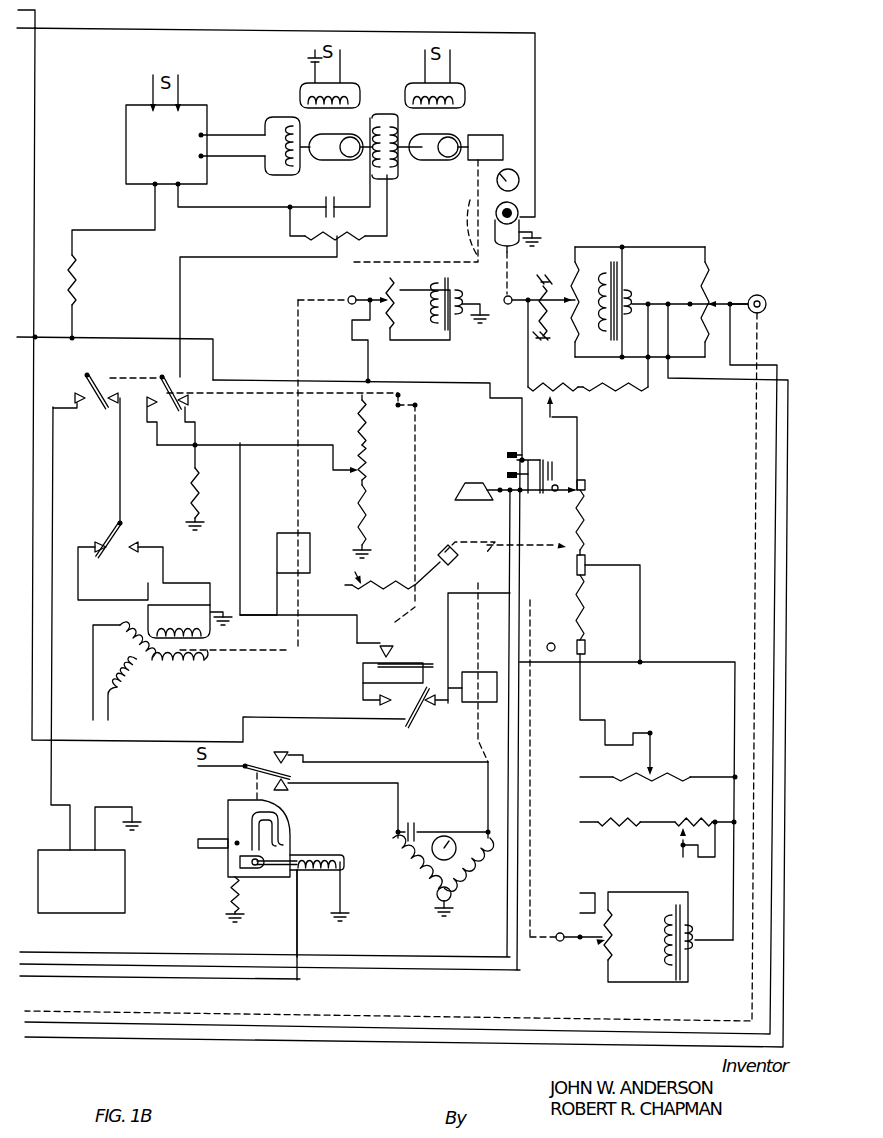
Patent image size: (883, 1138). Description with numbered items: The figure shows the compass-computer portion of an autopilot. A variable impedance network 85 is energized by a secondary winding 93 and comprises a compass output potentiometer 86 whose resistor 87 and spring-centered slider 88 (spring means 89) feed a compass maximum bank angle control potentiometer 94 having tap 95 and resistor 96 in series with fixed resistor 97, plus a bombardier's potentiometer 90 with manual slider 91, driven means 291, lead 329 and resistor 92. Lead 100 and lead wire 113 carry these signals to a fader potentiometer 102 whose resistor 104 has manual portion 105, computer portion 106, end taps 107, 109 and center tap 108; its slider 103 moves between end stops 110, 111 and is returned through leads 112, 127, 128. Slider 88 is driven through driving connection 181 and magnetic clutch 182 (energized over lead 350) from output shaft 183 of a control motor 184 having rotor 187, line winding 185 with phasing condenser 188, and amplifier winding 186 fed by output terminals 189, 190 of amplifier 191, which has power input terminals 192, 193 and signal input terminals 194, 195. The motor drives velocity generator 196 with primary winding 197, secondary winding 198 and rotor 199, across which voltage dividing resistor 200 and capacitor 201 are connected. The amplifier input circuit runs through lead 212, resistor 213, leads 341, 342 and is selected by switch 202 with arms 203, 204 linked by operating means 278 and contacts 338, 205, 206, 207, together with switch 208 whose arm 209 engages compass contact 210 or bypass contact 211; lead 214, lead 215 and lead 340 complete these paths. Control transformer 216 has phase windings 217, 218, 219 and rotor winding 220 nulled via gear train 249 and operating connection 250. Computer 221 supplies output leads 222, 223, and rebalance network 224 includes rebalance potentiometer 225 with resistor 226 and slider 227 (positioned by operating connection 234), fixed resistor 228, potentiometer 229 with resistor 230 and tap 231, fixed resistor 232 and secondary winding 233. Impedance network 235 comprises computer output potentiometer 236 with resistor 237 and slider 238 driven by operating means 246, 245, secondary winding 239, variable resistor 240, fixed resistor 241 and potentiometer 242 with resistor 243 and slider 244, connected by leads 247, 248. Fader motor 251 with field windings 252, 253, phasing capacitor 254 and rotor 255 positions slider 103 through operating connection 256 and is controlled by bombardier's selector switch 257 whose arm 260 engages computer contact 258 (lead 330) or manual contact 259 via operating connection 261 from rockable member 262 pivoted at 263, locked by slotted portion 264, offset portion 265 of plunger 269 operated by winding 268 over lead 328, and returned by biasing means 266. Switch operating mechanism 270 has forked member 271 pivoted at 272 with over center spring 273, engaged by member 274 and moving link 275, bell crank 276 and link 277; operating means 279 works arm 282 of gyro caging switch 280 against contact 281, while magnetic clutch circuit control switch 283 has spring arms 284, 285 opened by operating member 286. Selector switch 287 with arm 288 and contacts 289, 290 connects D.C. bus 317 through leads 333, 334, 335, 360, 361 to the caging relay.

The lead 350 is at (111, 12).
The main D.C. bus bar 317 is at (36, 72).
The lead 335 is at (100, 338).
The lead 341 is at (206, 257).
The lead 212 is at (155, 220).
The resistor 213 is at (75, 272).
The amplifier 191 is at (126, 136).
The power input terminal 192 is at (152, 104).
The power input terminal 193 is at (179, 104).
The output terminal 189 is at (201, 135).
The output terminal 190 is at (213, 155).
The signal input terminal 194 is at (155, 186).
The signal input terminal 195 is at (180, 188).
The amplifier winding 186 is at (280, 175).
The capacitor 201 is at (334, 204).
The lead 342 is at (232, 207).
The voltage dividing resistor 200 is at (352, 244).
The rotor 187 is at (332, 142).
The control motor 184 is at (352, 160).
The secondary winding 198 is at (398, 142).
The velocity generator 196 is at (430, 178).
The rotor 199 is at (425, 160).
The output shaft 183 is at (505, 152).
The operating connection 234 is at (415, 211).
The line winding 185 is at (347, 94).
The phasing condenser 188 is at (306, 56).
The primary winding 197 is at (467, 96).
The magnetic clutch 182 is at (520, 212).
The compass output potentiometer 86 is at (544, 234).
The driving connection 181 is at (505, 276).
The spring means 89 is at (562, 270).
The slider 88 is at (560, 330).
The resistor 96 is at (560, 385).
The adjustable tap 95 is at (552, 402).
The compass maximum bank angle control potentiometer 94 is at (593, 398).
The resistor 87 is at (581, 282).
The variable impedance network 85 is at (640, 302).
The fixed resistor 97 is at (622, 360).
The secondary winding 93 is at (634, 300).
The resistor 92 is at (710, 346).
The bombardier's potentiometer 90 is at (719, 272).
The slider 91 is at (738, 300).
The driven means 291 is at (754, 472).
The lead 329 is at (777, 342).
The lead wire 113 is at (680, 380).
The lead 328 is at (88, 979).
The lead 112 is at (47, 953).
The lead wire 128 is at (615, 663).
The switch arm 203 is at (85, 373).
The computer contact 338 is at (76, 408).
The operating means 278 is at (112, 377).
The switch arm 204 is at (164, 378).
The double pole double throw switch 202 is at (181, 382).
The compass contact 205 is at (145, 399).
The rebalancing network contact 206 is at (157, 445).
The ground contact 207 is at (190, 404).
The lead 340 is at (198, 456).
The lead 214 is at (121, 470).
The switch arm 209 is at (118, 520).
The single pole double throw switch 208 is at (130, 528).
The compass contact 210 is at (87, 547).
The lead 215 is at (79, 601).
The compass bypass contact 211 is at (152, 560).
The rotor winding 220 is at (160, 628).
The phase winding 219 is at (133, 642).
The phase winding 218 is at (180, 666).
The phase winding 217 is at (132, 690).
The control transformer 216 is at (217, 658).
The operating connection 250 is at (290, 650).
The output lead 222 is at (53, 792).
The output lead 223 is at (118, 806).
The computer 221 is at (125, 881).
The lead 361 is at (478, 388).
The slider 227 is at (352, 296).
The rebalance potentiometer 225 is at (375, 290).
The resistor 226 is at (394, 296).
The rebalance network 224 is at (426, 310).
The secondary winding 233 is at (462, 302).
The operating means 246 is at (297, 322).
The link 277 is at (296, 400).
The bell crank 276 is at (403, 394).
The link 275 is at (416, 452).
The fixed resistor 228 is at (360, 406).
The potentiometer 229 is at (350, 454).
The resistor 230 is at (366, 469).
The adjustable tap 231 is at (352, 473).
The fixed resistor 232 is at (366, 524).
The switch operating mechanism 270 is at (381, 556).
The over center spring 273 is at (372, 587).
The pivot point 272 is at (451, 566).
The forked member 271 is at (460, 558).
The member 274 is at (462, 483).
The magnetic clutch circuit control switch 283 is at (503, 450).
The spring arm 285 is at (505, 457).
The spring arm 284 is at (528, 458).
The operating member 286 is at (552, 470).
The end stop 110 is at (557, 485).
The lead 100 is at (579, 430).
The slider 103 is at (560, 493).
The end tap 107 is at (586, 487).
The manual portion 105 is at (583, 523).
The fader potentiometer 102 is at (616, 541).
The center tap 108 is at (586, 559).
The computer portion 106 is at (583, 596).
The end tap 109 is at (586, 648).
The resistor 104 is at (548, 563).
The lead wire 127 is at (642, 606).
The lead 248 is at (688, 662).
The end stop 111 is at (551, 643).
The lead 247 is at (582, 712).
The impedance network 235 is at (684, 739).
The slider 244 is at (647, 762).
The resistor 243 is at (688, 777).
The potentiometer 242 is at (671, 757).
The fixed resistor 241 is at (618, 814).
The variable resistor 240 is at (681, 810).
The resistor 237 is at (615, 913).
The secondary winding 239 is at (697, 936).
The slider 238 is at (558, 932).
The computer output potentiometer 236 is at (585, 945).
The operating means 245 is at (535, 882).
The lead 360 is at (449, 664).
The operating connection 256 is at (485, 755).
The arm 282 is at (412, 664).
The lead 333 is at (398, 675).
The contact 281 is at (362, 655).
The gyro caging switch 280 is at (347, 647).
The selector switch 287 is at (350, 693).
The switch contact 290 is at (363, 702).
The switch arm 288 is at (412, 727).
The switch contact 289 is at (438, 708).
The operating means 279 is at (392, 619).
The lead 334 is at (240, 546).
The gear train 249 is at (280, 574).
The computer contact 258 is at (292, 750).
The lead 330 is at (348, 762).
The switch arm 260 is at (291, 770).
The operating connection 261 is at (253, 787).
The manual contact 259 is at (302, 790).
The bombardier's selector switch 257 is at (295, 838).
The slotted portion 264 is at (284, 832).
The solenoid plunger 269 is at (290, 860).
The winding 268 is at (340, 863).
The rockable member 262 is at (205, 848).
The pivot 263 is at (236, 845).
The laterally offset portion 265 is at (250, 870).
The biasing means 266 is at (230, 900).
The fader motor 251 is at (443, 798).
The phasing capacitor 254 is at (413, 821).
The rotor 255 is at (452, 836).
The field winding 252 is at (412, 870).
The field winding 253 is at (455, 888).